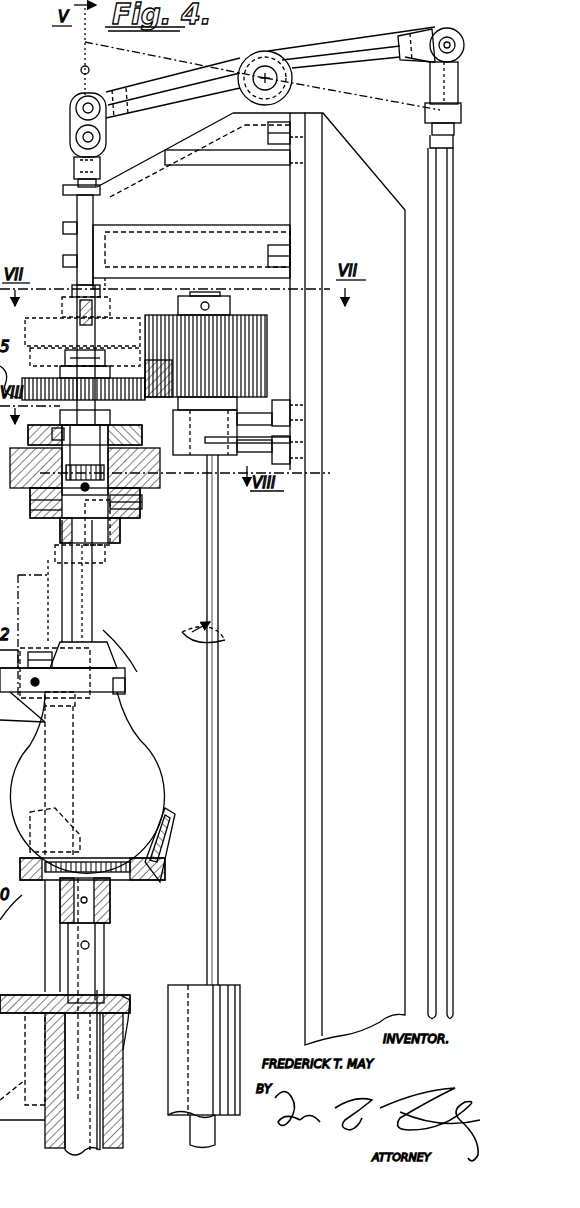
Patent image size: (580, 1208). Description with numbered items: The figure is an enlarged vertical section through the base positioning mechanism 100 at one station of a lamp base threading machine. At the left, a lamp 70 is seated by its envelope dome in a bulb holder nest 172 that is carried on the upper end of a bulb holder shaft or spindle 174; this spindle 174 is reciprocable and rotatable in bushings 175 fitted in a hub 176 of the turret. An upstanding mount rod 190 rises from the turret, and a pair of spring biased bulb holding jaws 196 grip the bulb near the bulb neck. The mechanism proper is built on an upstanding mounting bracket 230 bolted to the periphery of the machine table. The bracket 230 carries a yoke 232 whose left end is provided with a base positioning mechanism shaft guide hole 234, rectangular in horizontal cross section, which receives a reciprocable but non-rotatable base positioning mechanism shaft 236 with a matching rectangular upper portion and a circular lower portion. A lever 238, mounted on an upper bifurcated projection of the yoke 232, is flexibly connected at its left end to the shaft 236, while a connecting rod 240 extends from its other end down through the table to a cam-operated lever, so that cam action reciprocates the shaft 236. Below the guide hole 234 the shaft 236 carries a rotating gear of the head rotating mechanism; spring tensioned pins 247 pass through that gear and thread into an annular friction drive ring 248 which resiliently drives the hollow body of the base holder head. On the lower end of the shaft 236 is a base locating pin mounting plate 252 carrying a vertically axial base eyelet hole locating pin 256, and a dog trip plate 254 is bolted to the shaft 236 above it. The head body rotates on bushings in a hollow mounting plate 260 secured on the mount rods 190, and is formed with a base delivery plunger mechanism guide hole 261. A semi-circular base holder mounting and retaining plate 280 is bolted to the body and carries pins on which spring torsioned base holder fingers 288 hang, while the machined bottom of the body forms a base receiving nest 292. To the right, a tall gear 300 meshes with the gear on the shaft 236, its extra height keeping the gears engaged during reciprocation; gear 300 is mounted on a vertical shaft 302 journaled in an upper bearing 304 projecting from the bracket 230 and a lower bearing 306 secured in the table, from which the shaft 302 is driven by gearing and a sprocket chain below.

The base positioning mechanism 100 is at (358, 146).
The lamp 70 is at (143, 766).
The bulb holder nest 172 is at (130, 852).
The bulb holder shaft or spindle 174 is at (98, 966).
The bushings 175 is at (120, 1025).
The hub 176 is at (118, 1112).
The mount rod 190 is at (58, 956).
The bulb holding jaws 196 is at (127, 694).
The mounting bracket 230 is at (312, 762).
The yoke 232 is at (140, 178).
The base positioning mechanism shaft guide hole 234 is at (77, 210).
The base positioning mechanism shaft 236 is at (100, 300).
The lever 238 is at (330, 48).
The connecting rod 240 is at (440, 592).
The spring tensioned pins 247 is at (68, 356).
The annular friction drive ring 248 is at (140, 450).
The base locating pin mounting plate 252 is at (60, 508).
The dog trip plate 254 is at (106, 420).
The base eyelet hole locating pin 256 is at (62, 526).
The mounting plate 260 is at (136, 505).
The base delivery plunger mechanism guide hole 261 is at (60, 496).
The base holder mounting and retaining plate 280 is at (115, 530).
The base holder finger 288 is at (85, 630).
The base receiving portion or nest 292 is at (105, 560).
The gear 300 is at (262, 352).
The vertical shaft 302 is at (220, 580).
The upper bearing 304 is at (232, 470).
The lower bearing 306 is at (232, 1022).